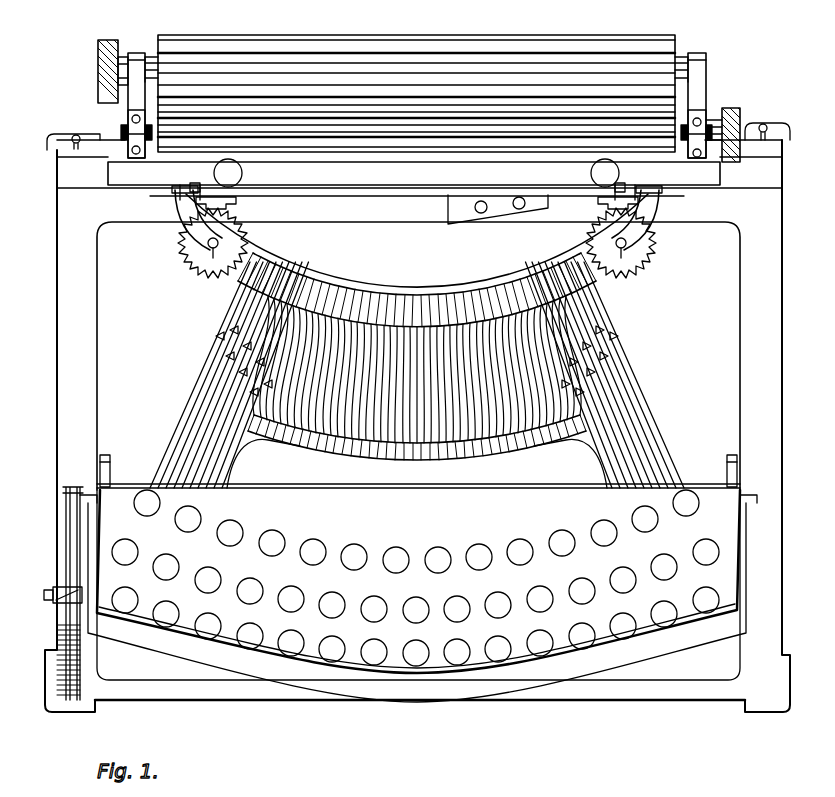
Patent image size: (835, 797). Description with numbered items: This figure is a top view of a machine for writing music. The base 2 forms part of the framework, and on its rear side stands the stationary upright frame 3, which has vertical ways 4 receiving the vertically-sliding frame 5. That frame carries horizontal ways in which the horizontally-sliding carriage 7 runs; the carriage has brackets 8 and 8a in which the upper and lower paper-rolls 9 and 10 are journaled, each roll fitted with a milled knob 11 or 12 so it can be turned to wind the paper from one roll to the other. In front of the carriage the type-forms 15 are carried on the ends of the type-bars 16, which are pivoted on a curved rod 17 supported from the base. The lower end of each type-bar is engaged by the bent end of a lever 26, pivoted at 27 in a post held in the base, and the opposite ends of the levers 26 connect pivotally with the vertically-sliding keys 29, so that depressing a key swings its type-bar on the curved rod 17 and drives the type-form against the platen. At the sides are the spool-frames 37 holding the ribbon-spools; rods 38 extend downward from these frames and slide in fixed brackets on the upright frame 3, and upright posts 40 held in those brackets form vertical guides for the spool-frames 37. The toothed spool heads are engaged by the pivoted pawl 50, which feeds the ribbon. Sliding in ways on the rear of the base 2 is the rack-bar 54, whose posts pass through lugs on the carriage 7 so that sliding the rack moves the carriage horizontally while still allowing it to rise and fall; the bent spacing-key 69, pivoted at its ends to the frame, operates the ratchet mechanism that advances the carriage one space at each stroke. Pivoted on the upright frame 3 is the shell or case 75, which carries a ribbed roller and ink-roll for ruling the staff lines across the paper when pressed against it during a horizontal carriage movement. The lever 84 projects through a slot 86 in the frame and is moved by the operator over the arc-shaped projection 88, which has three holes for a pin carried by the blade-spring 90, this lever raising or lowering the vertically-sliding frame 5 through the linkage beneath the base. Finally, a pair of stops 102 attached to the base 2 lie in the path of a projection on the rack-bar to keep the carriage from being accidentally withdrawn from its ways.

The base 2 is at (68, 311).
The stationary upright frame 3 is at (362, 192).
The vertical ways 4 is at (195, 184).
The vertically-sliding frame 5 is at (178, 193).
The horizontally-sliding carriage 7 is at (431, 180).
The bracket 8 is at (128, 126).
The bracket 8a is at (138, 60).
The upper paper-roll 9 is at (402, 150).
The lower paper-roll 10 is at (416, 93).
The milled knob 11 is at (98, 69).
The milled knob 12 is at (740, 116).
The type-forms 15 is at (275, 441).
The type-bars 16 is at (318, 352).
The curved rod 17 is at (270, 260).
The lever 26 is at (210, 422).
The pivot 27 is at (612, 368).
The vertically-sliding keys 29 is at (399, 550).
The spool-frames 37 is at (182, 224).
The rods 38 is at (186, 260).
The upright posts 40 is at (418, 260).
The upper pawl 50 is at (417, 214).
The rack-bar 54 is at (88, 158).
The spacing-key 69 is at (378, 694).
The shell or case 75 is at (508, 216).
The lever 84 is at (67, 596).
The slot 86 is at (68, 543).
The arc-shaped projection 88 is at (58, 556).
The blade-spring 90 is at (44, 596).
The stops 102 is at (72, 139).